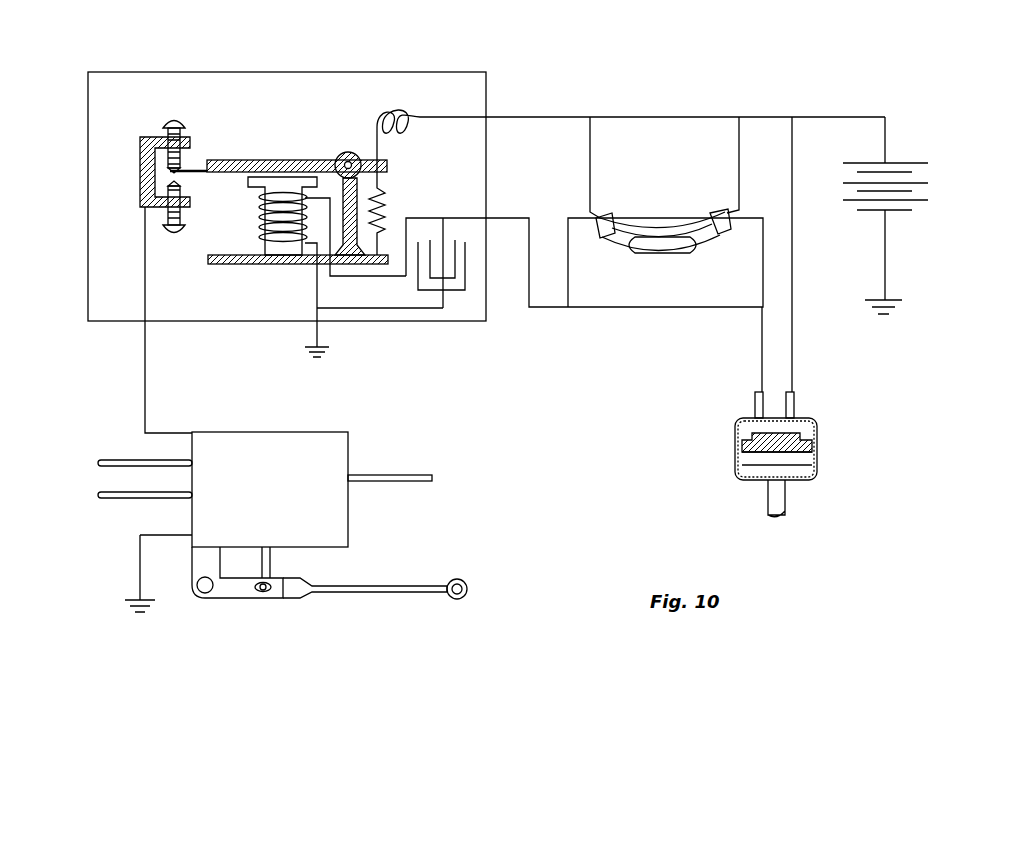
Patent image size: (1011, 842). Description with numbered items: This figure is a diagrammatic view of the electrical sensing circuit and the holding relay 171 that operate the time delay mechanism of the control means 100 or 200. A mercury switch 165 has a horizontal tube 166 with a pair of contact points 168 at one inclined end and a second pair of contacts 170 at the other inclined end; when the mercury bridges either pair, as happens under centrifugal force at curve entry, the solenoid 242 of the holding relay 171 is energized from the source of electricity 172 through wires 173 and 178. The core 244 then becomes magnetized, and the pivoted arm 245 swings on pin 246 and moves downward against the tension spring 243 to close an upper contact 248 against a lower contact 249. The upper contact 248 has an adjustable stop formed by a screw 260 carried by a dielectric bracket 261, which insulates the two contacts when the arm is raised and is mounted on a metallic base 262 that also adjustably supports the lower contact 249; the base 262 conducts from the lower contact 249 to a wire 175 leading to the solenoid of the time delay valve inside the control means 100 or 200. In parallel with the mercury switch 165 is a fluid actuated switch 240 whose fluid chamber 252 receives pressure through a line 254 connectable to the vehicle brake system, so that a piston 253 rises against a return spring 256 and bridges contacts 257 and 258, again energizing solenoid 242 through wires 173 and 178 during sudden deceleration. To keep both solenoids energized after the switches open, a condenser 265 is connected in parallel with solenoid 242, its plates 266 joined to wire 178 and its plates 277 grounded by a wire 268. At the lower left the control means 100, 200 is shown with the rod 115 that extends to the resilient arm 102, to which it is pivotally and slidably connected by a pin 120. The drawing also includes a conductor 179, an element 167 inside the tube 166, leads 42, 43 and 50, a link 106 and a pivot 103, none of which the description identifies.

The holding relay 171 is at (284, 66).
The screw 260 is at (178, 118).
The dielectric bracket 261 is at (142, 142).
The upper contact 248 is at (172, 173).
The lower contact 249 is at (168, 187).
The metallic base 262 is at (165, 218).
The pivoted arm 245 is at (230, 160).
The pin 246 is at (346, 160).
The solenoid 242 is at (262, 210).
The core 244 is at (250, 268).
The tension spring 243 is at (385, 205).
The conductor 179 is at (548, 117).
The wire 178 is at (412, 218).
The plates 266 is at (458, 263).
The plates 277 is at (466, 288).
The condenser 265 is at (460, 298).
The wire 268 is at (365, 310).
The wire 173 is at (766, 114).
The source of electricity 172 is at (908, 165).
The mercury switch 165 is at (621, 214).
The horizontal tube 166 is at (674, 228).
The mercury body 167 is at (680, 254).
The contact points 168 is at (606, 238).
The contacts 170 is at (716, 235).
The contact 258 is at (797, 400).
The contact 257 is at (755, 400).
The fluid actuated switch 240 is at (826, 415).
The return spring 256 is at (815, 440).
The piston 253 is at (740, 448).
The fluid chamber 252 is at (752, 465).
The line 254 is at (787, 505).
The wire 175 is at (148, 395).
The control means 100 is at (236, 428).
The control means 200 is at (299, 428).
The lead 42 is at (125, 460).
The lead 43 is at (140, 494).
The lead 50 is at (410, 475).
The rod 115 is at (272, 563).
The resilient arm 102 is at (312, 596).
The link 106 is at (467, 585).
The pivot 103 is at (200, 594).
The pin 120 is at (260, 593).